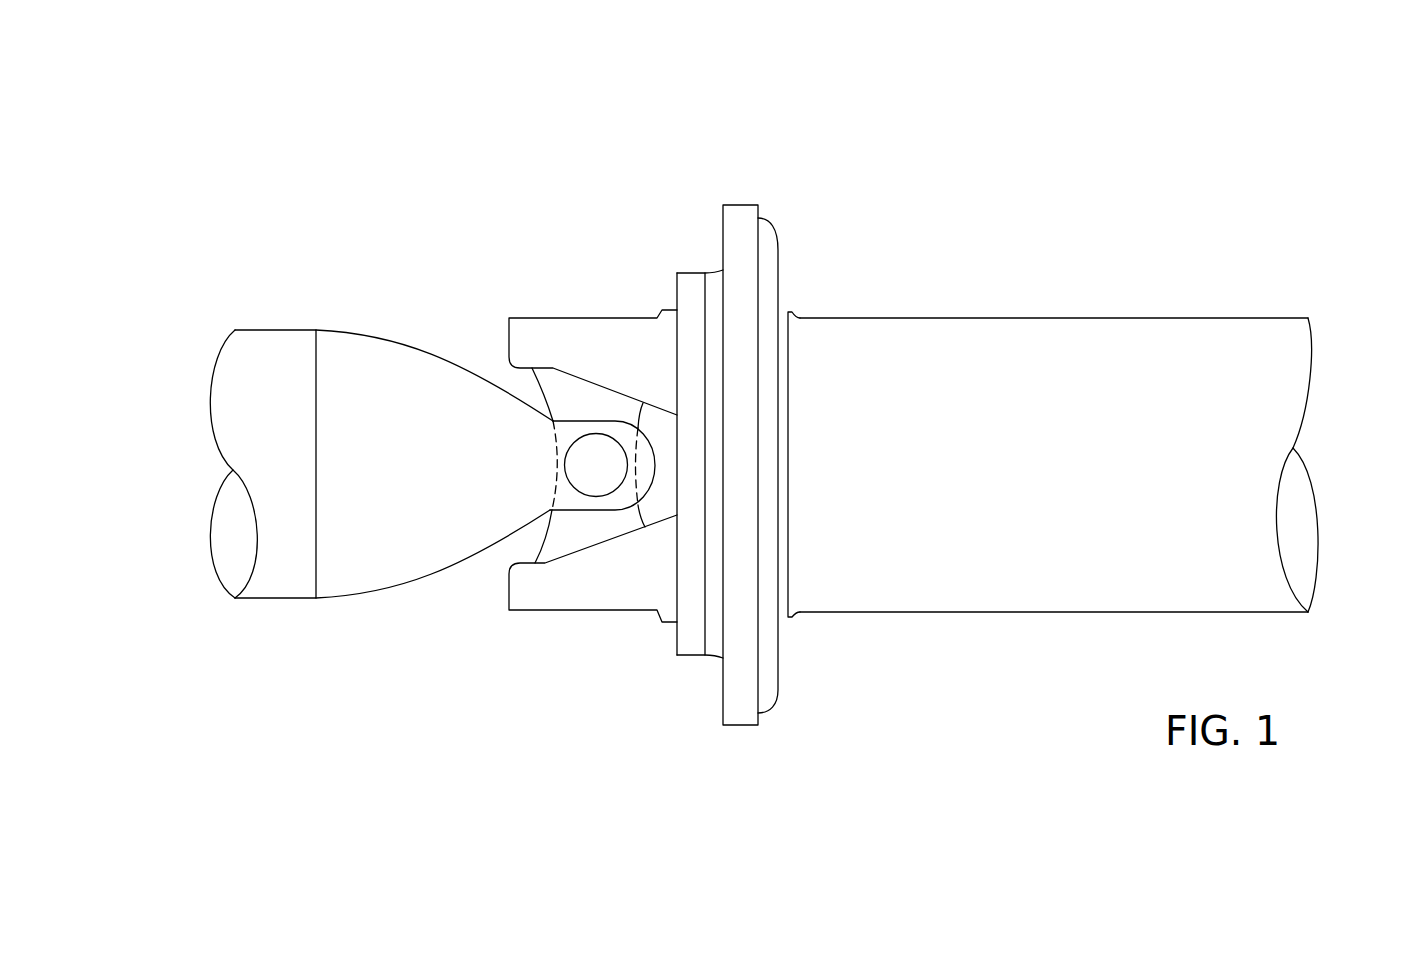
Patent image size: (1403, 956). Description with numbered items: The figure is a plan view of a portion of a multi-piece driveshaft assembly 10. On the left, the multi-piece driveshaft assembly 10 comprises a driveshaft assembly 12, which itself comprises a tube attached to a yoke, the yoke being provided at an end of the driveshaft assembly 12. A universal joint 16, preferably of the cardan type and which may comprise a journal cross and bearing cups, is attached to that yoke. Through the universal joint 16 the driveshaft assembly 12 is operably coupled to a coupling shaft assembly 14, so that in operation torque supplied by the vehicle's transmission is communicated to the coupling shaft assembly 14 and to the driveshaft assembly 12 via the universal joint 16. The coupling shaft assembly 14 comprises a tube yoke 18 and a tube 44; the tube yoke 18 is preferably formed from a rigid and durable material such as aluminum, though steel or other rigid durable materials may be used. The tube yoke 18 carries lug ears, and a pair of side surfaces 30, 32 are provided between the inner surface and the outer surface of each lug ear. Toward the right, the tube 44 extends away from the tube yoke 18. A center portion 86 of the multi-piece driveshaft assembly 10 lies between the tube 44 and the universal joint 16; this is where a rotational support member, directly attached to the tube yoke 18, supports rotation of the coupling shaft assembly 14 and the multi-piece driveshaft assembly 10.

The multi-piece driveshaft assembly 10 is at (1302, 141).
The driveshaft assembly 12 is at (341, 641).
The coupling shaft assembly 14 is at (987, 255).
The universal joint 16 is at (548, 545).
The tube yoke 18 is at (513, 612).
The side surface 30 is at (508, 333).
The side surface 32 is at (588, 330).
The tube 44 is at (1165, 333).
The center portion 86 is at (800, 290).